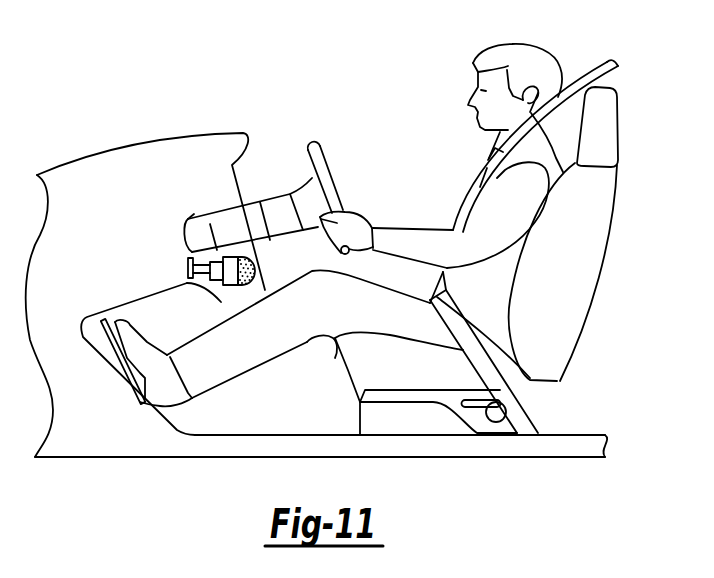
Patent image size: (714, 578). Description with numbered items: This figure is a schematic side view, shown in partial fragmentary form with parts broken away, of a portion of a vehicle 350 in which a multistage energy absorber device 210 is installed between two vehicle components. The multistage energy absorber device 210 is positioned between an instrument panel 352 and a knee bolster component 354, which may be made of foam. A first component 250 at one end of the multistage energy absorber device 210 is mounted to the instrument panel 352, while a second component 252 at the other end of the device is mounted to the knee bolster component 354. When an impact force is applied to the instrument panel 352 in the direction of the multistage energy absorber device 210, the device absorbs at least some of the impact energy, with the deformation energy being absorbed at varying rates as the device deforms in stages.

The vehicle 350 is at (220, 82).
The instrument panel 352 is at (125, 148).
The first component 250 is at (212, 260).
The multistage energy absorber device 210 is at (207, 292).
The knee bolster component 354 is at (257, 266).
The second component 252 is at (237, 284).